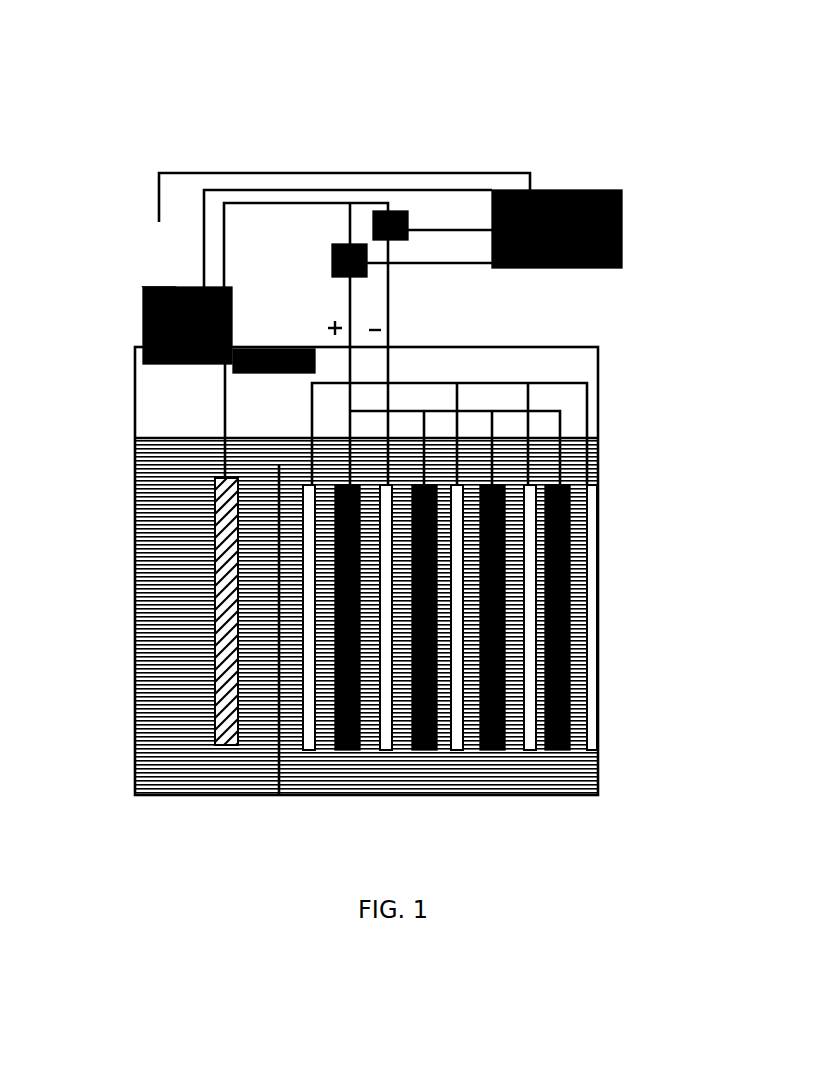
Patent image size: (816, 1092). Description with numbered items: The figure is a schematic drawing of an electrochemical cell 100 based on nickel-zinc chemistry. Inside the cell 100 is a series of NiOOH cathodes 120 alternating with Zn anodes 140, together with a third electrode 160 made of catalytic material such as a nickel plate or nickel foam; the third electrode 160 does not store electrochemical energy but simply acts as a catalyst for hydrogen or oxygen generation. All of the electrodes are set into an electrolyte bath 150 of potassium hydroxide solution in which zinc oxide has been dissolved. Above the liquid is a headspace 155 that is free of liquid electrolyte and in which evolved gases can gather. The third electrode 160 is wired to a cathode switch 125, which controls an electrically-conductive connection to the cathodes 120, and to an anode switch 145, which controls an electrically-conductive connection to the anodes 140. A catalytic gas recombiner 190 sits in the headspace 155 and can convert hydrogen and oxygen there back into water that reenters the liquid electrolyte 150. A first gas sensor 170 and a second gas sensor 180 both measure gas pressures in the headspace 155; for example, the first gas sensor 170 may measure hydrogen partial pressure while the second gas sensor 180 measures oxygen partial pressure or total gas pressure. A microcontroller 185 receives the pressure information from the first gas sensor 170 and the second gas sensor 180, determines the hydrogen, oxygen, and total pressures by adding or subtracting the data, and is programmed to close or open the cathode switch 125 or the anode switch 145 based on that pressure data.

The electrochemical cell 100 is at (158, 118).
The NiOOH cathodes 120 is at (530, 493).
The cathode switch 125 is at (410, 220).
The Zn anodes 140 is at (572, 533).
The anode switch 145 is at (350, 243).
The electrolyte bath 150 is at (192, 473).
The headspace 155 is at (177, 400).
The third electrode 160 is at (217, 618).
The first gas sensor 170 is at (152, 313).
The second gas sensor 180 is at (193, 293).
The microcontroller 185 is at (598, 227).
The catalytic gas recombiner 190 is at (271, 348).